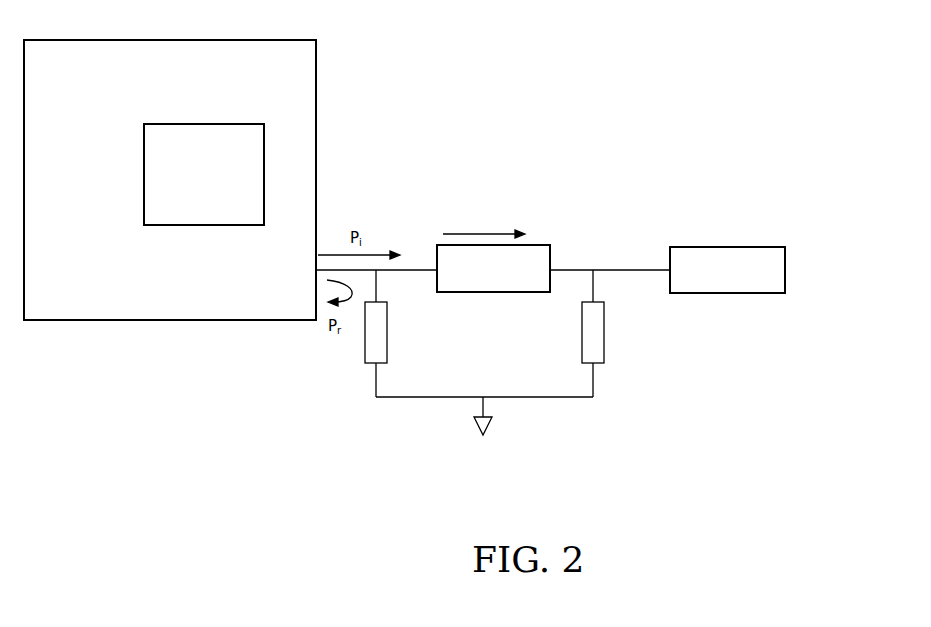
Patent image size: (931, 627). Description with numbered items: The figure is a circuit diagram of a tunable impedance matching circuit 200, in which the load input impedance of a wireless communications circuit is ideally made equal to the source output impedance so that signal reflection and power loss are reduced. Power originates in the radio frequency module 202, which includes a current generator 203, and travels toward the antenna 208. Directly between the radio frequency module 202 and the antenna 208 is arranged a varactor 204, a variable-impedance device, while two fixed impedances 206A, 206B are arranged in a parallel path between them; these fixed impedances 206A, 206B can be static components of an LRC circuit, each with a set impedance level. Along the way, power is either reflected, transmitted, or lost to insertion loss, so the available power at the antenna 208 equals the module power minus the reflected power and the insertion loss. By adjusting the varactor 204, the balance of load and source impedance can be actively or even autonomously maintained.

The circuit 200 is at (818, 158).
The radio frequency module 202 is at (215, 321).
The current generator 203 is at (198, 226).
The varactor 204 is at (551, 268).
The fixed impedance 206A is at (373, 370).
The fixed impedance 206B is at (603, 366).
The antenna 208 is at (773, 295).